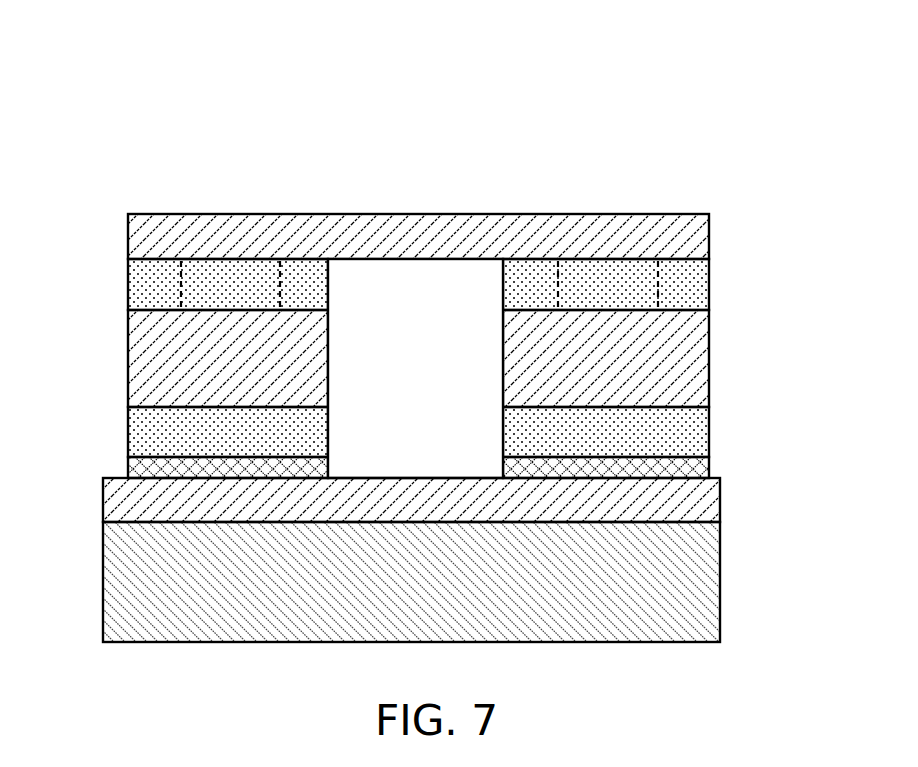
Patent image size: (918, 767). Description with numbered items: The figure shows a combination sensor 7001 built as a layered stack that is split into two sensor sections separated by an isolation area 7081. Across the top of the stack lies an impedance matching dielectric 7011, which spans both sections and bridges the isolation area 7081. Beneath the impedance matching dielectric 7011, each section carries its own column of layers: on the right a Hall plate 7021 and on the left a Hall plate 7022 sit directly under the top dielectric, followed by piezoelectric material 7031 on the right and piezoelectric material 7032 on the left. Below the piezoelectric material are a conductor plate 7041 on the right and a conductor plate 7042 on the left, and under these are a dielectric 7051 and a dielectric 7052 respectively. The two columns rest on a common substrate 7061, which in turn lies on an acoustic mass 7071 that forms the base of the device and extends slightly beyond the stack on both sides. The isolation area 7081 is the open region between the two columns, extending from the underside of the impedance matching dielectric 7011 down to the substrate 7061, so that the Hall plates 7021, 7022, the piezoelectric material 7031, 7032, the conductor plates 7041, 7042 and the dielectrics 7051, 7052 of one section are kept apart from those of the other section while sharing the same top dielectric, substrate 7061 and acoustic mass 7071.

The sensor 7001 is at (112, 107).
The impedance matching dielectric 7011 is at (710, 231).
The Hall plate 7021 is at (710, 284).
The Hall plate 7022 is at (135, 293).
The piezoelectric material 7031 is at (710, 360).
The piezoelectric material 7032 is at (138, 360).
The conductor plate 7041 is at (710, 431).
The conductor plate 7042 is at (138, 432).
The dielectric 7051 is at (710, 467).
The dielectric 7052 is at (140, 472).
The substrate 7061 is at (720, 501).
The acoustic mass 7071 is at (720, 580).
The isolation area 7081 is at (409, 280).